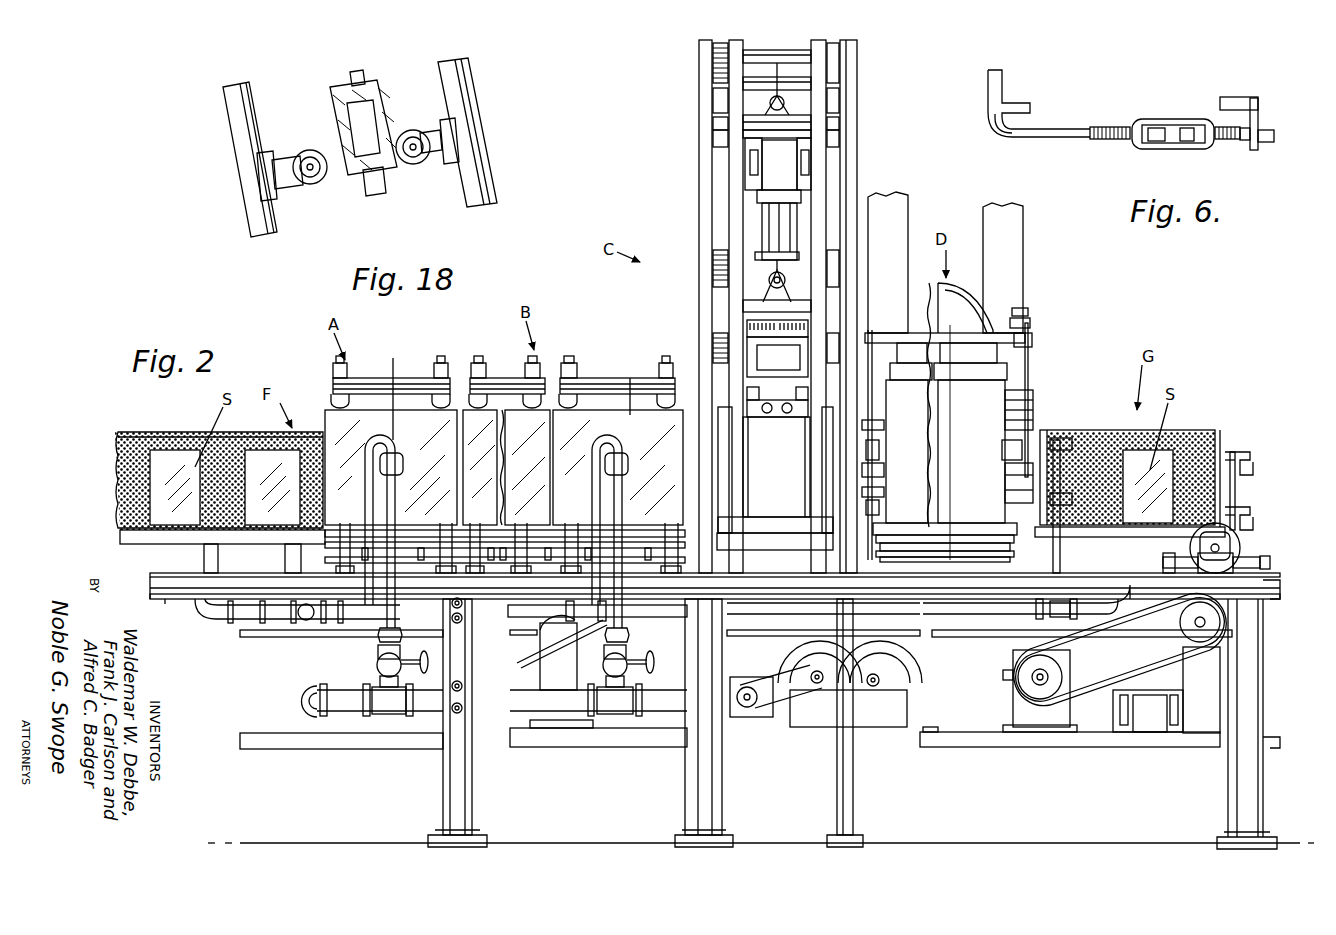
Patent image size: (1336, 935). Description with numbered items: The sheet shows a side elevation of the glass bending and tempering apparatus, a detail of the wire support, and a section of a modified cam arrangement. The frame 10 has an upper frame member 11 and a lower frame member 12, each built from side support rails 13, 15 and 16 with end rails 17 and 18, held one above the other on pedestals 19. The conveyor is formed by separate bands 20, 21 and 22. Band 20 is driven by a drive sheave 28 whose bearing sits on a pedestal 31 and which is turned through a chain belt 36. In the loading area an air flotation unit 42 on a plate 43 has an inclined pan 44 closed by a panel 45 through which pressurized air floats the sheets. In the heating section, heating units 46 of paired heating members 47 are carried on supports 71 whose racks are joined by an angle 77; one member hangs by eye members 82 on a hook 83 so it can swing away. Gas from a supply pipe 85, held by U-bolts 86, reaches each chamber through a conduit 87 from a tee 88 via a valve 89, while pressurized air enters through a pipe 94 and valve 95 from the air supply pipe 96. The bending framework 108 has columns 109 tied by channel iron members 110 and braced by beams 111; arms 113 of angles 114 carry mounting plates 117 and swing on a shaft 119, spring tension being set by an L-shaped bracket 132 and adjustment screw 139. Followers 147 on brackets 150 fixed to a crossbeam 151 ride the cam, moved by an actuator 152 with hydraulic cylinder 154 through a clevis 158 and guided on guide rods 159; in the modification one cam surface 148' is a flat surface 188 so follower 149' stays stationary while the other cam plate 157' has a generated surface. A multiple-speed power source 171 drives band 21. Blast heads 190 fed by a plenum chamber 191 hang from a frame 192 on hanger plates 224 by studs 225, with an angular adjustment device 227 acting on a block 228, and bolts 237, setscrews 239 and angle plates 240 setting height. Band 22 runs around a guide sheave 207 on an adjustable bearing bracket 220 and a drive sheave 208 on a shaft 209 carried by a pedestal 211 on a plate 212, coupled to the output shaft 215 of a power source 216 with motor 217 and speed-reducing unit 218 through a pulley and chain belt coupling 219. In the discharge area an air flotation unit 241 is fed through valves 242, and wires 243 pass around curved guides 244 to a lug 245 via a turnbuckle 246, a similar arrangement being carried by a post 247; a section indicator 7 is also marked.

In FIG. 2, the section line 7 is at (403, 626).
In FIG. 2, the frame 10 is at (807, 32).
In FIG. 2, the upper frame member 11 is at (172, 600).
In FIG. 2, the lower frame member 12 is at (262, 746).
In FIG. 2, the side support rail 13 is at (189, 600).
In FIG. 2, the side support rail 15 is at (293, 744).
In FIG. 2, the side support rail 16 is at (973, 320).
In FIG. 2, the end rail 17 is at (1280, 582).
In FIG. 2, the end rail 18 is at (1280, 748).
In FIG. 2, the pedestals 19 is at (450, 786).
In FIG. 2, the band 20 is at (285, 637).
In FIG. 2, the band 21 is at (737, 636).
In FIG. 2, the band 22 is at (950, 637).
In FIG. 2, the drive sheave 28 is at (558, 653).
In FIG. 2, the pedestal 31 is at (557, 730).
In FIG. 2, the chain belt 36 is at (519, 662).
In FIG. 2, the air flotation unit 42 is at (117, 430).
In FIG. 2, the plate 43 is at (230, 542).
In FIG. 2, the pan 44 is at (163, 434).
In FIG. 2, the panel 45 is at (185, 447).
In FIG. 2, the heating units 46 is at (372, 380).
In FIG. 2, the heating members 47 is at (357, 433).
In FIG. 2, the supports 71 is at (630, 375).
In FIG. 2, the angle 77 is at (640, 422).
In FIG. 2, the eye members 82 is at (506, 467).
In FIG. 2, the hook 83 is at (533, 365).
In FIG. 2, the supply pipe 85 is at (347, 712).
In FIG. 2, the U-bolts 86 is at (462, 712).
In FIG. 2, the conduits 87 is at (397, 463).
In FIG. 2, the tee 88 is at (390, 712).
In FIG. 2, the valve 89 is at (377, 665).
In FIG. 2, the pipe 94 is at (384, 443).
In FIG. 2, the valve 95 is at (378, 638).
In FIG. 2, the supply pipe 96 is at (216, 622).
In FIG. 2, the framework 108 is at (696, 110).
In FIG. 2, the columns 109 is at (705, 148).
In FIG. 2, the channel iron members 110 is at (712, 62).
In FIG. 2, the beams 111 is at (712, 282).
In FIG. 2, the arms 113 is at (740, 185).
In FIG. 18, the angles 114 is at (237, 128).
In FIG. 2, the angles 114 is at (737, 210).
In FIG. 2, the mounting plate 117 is at (808, 498).
In FIG. 2, the shaft 119 is at (797, 87).
In FIG. 2, the L-shaped bracket 132 is at (762, 417).
In FIG. 2, the adjustment screw 139 is at (786, 414).
In FIG. 18, the crossbeam 151 is at (260, 177).
In FIG. 2, the crossbeam 151 is at (760, 338).
In FIG. 2, the actuator 152 is at (752, 232).
In FIG. 2, the hydraulic cylinder 154 is at (777, 243).
In FIG. 2, the clevis 158 is at (767, 290).
In FIG. 2, the multiple-speed power source 171 is at (780, 712).
In FIG. 2, the blast heads 190 is at (984, 498).
In FIG. 2, the plenum chamber 191 is at (990, 305).
In FIG. 2, the frame 192 is at (890, 228).
In FIG. 2, the guide sheave 207 is at (1240, 545).
In FIG. 2, the drive sheave 208 is at (1205, 623).
In FIG. 2, the shaft 209 is at (1212, 628).
In FIG. 2, the pedestal 211 is at (1205, 705).
In FIG. 2, the plate 212 is at (1205, 738).
In FIG. 2, the output shaft 215 is at (1007, 675).
In FIG. 2, the power source 216 is at (1025, 695).
In FIG. 2, the motor 217 is at (1157, 712).
In FIG. 2, the speed-reducing unit 218 is at (1043, 710).
In FIG. 2, the pulley and chain belt coupling 219 is at (1100, 665).
In FIG. 2, the adjustable bearing bracket 220 is at (1245, 562).
In FIG. 2, the hanger plates 224 is at (1028, 363).
In FIG. 2, the studs 225 is at (880, 456).
In FIG. 2, the angular adjustment device 227 is at (1020, 410).
In FIG. 2, the block 228 is at (880, 472).
In FIG. 2, the bolts 237 is at (1030, 340).
In FIG. 2, the setscrews 239 is at (1022, 311).
In FIG. 2, the angle plates 240 is at (1027, 323).
In FIG. 2, the air flotation unit 241 is at (1180, 440).
In FIG. 2, the valves 242 is at (250, 620).
In FIG. 6, the wires 243 is at (1065, 132).
In FIG. 2, the wires 243 is at (1177, 517).
In FIG. 6, the curved guides 244 is at (1002, 102).
In FIG. 2, the curved guides 244 is at (1063, 445).
In FIG. 6, the lug 245 is at (1253, 117).
In FIG. 6, the turnbuckle 246 is at (1170, 123).
In FIG. 2, the post 247 is at (1055, 548).
In FIG. 18, the followers 147 is at (322, 187).
In FIG. 18, the cam surface 148' is at (354, 80).
In FIG. 18, the follower 149' is at (372, 156).
In FIG. 18, the bracket 150 is at (273, 178).
In FIG. 18, the cam plate 157' is at (331, 78).
In FIG. 18, the guide rods 159 is at (383, 187).
In FIG. 18, the flat surface 188 is at (387, 117).